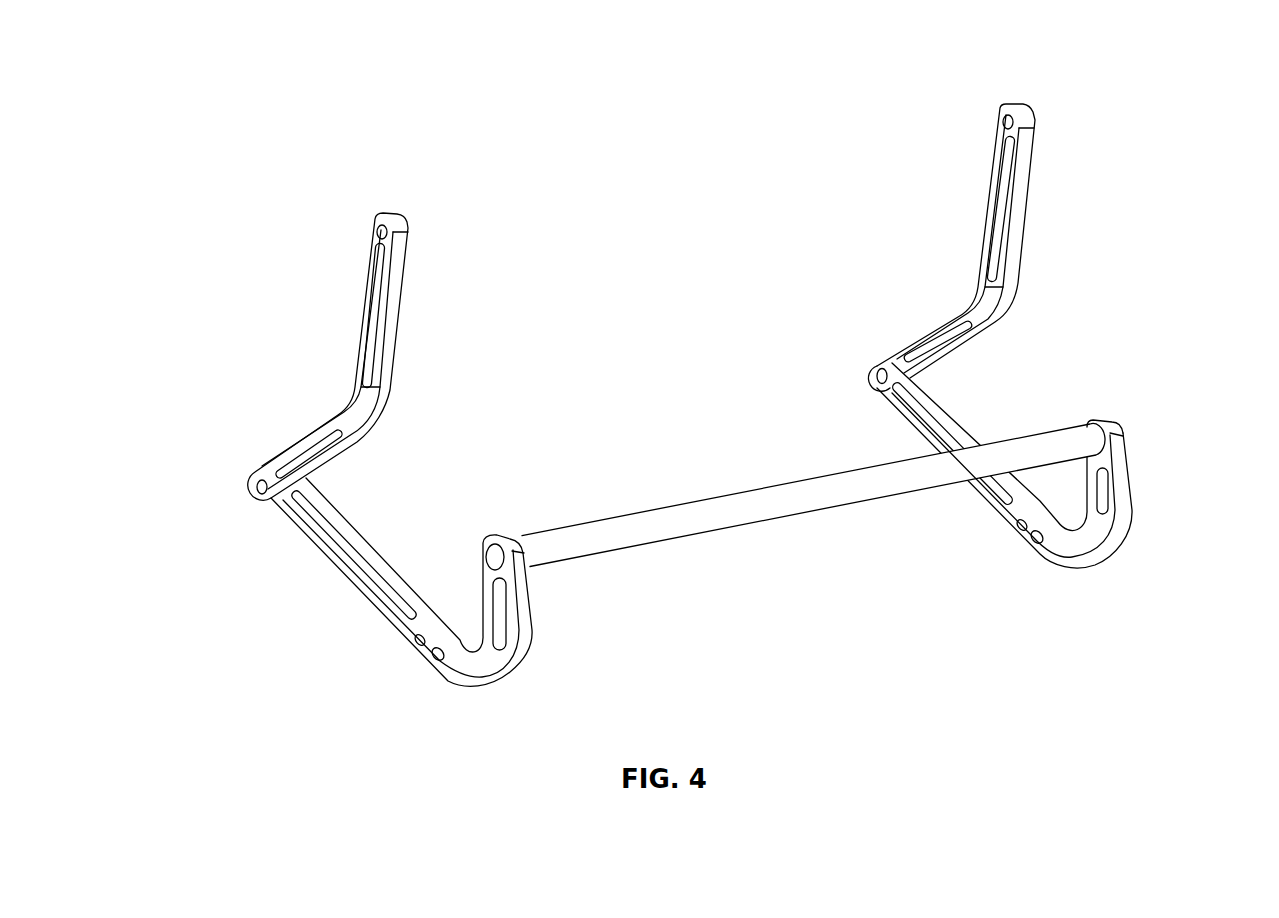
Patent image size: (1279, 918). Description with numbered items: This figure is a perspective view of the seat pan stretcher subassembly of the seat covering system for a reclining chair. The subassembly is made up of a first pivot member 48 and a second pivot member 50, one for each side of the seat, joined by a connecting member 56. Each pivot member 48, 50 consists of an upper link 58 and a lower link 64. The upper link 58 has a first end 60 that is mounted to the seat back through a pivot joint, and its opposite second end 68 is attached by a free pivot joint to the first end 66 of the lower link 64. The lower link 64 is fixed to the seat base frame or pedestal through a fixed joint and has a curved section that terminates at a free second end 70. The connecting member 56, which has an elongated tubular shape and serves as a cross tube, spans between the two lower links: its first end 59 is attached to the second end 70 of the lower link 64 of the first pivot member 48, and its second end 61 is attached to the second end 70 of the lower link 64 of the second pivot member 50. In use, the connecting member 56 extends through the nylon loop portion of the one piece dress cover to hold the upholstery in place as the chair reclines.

The first pivot member 48 is at (260, 206).
The second pivot member 50 is at (1148, 84).
The connecting member 56 is at (768, 497).
The upper link 58 is at (397, 300).
The first end of connecting member 59 is at (486, 560).
The first end of upper link 60 is at (388, 211).
The second end of connecting member 61 is at (1093, 428).
The lower link 64 is at (377, 563).
The first end of lower link 66 is at (878, 363).
The second end of upper link 68 is at (258, 470).
The second end of lower link 70 is at (503, 536).